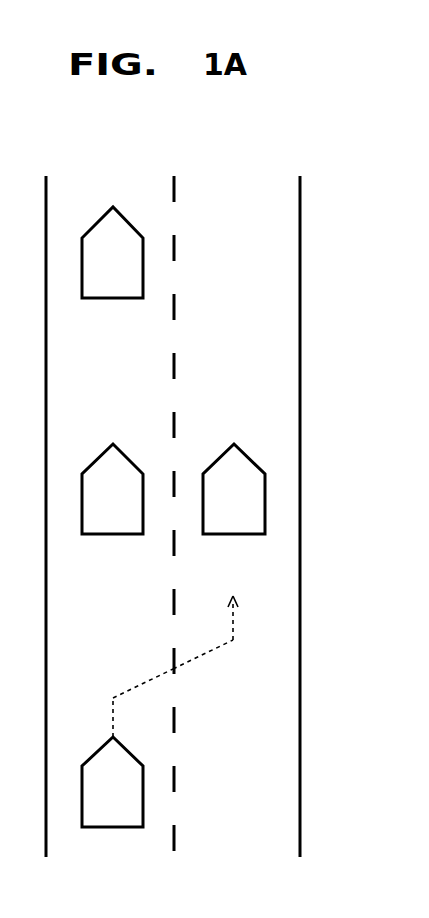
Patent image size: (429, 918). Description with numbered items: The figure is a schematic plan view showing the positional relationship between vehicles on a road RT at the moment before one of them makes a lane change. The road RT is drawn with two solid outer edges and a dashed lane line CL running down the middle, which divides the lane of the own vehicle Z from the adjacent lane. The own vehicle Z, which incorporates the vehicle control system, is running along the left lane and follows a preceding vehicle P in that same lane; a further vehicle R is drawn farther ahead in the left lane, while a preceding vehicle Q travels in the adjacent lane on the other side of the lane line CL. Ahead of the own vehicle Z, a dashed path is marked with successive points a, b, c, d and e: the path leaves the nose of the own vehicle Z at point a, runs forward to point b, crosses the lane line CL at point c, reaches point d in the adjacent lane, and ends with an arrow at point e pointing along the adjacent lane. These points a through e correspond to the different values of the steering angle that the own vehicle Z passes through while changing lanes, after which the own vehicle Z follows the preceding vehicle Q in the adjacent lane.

The road RT is at (313, 748).
The lane line CL is at (177, 782).
The vehicle R is at (112, 252).
The preceding vehicle P is at (112, 489).
The preceding vehicle Q is at (234, 489).
The own vehicle Z is at (112, 782).
The point a is at (100, 721).
The point b is at (133, 686).
The point c is at (200, 675).
The point d is at (242, 632).
The point e is at (242, 602).